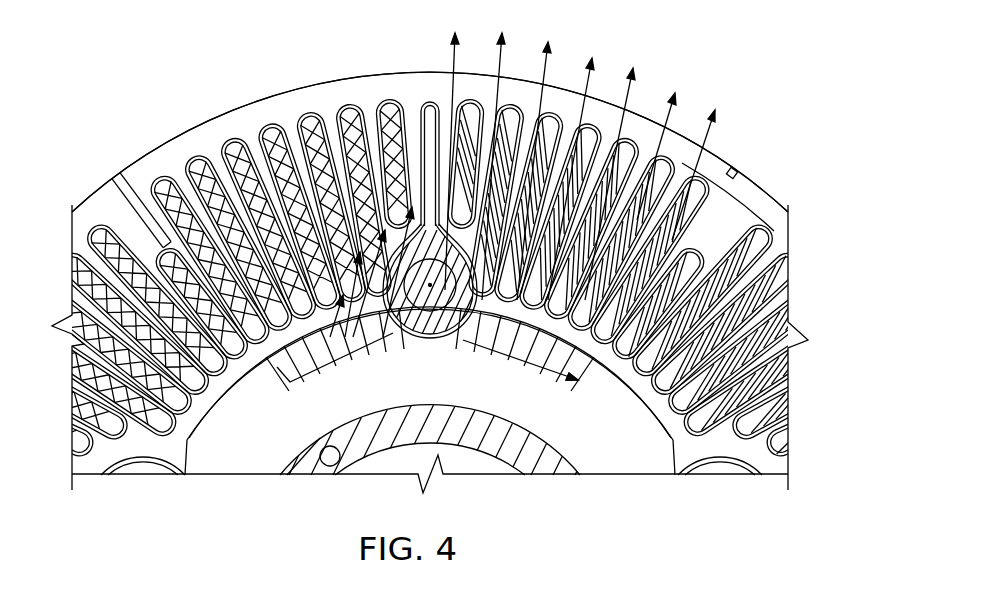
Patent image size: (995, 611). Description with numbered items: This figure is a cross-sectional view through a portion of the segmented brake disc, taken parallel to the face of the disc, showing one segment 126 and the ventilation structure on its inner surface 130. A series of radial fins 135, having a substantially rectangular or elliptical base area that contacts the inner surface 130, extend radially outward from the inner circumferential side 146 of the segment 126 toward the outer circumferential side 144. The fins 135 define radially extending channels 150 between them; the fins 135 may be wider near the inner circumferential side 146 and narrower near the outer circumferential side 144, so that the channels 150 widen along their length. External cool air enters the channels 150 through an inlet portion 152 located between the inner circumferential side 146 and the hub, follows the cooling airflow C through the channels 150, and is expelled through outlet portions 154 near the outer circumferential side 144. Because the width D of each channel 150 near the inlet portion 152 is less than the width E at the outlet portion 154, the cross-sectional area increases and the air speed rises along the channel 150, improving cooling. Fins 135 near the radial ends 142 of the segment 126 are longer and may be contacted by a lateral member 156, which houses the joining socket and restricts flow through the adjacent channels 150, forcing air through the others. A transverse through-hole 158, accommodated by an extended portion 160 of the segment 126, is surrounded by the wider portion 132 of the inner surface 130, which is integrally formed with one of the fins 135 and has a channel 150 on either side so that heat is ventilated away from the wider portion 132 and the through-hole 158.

The segment 126 is at (210, 108).
The inner surface 130 is at (323, 98).
The wider portion 132 is at (397, 360).
The radial fins 135 is at (562, 105).
The radial end 142 is at (736, 172).
The outer circumferential side 144 is at (271, 95).
The inner circumferential side 146 is at (277, 367).
The channels 150 is at (617, 228).
The inlet portion 152 is at (575, 378).
The outlet portion 154 is at (665, 137).
The lateral member 156 is at (712, 168).
The transverse through-hole 158 is at (425, 338).
The extended portion 160 is at (460, 403).
The cooling airflow C is at (500, 60).
The width of the channel near the inlet portion D is at (578, 380).
The width of the channel at the outlet portion E is at (645, 157).